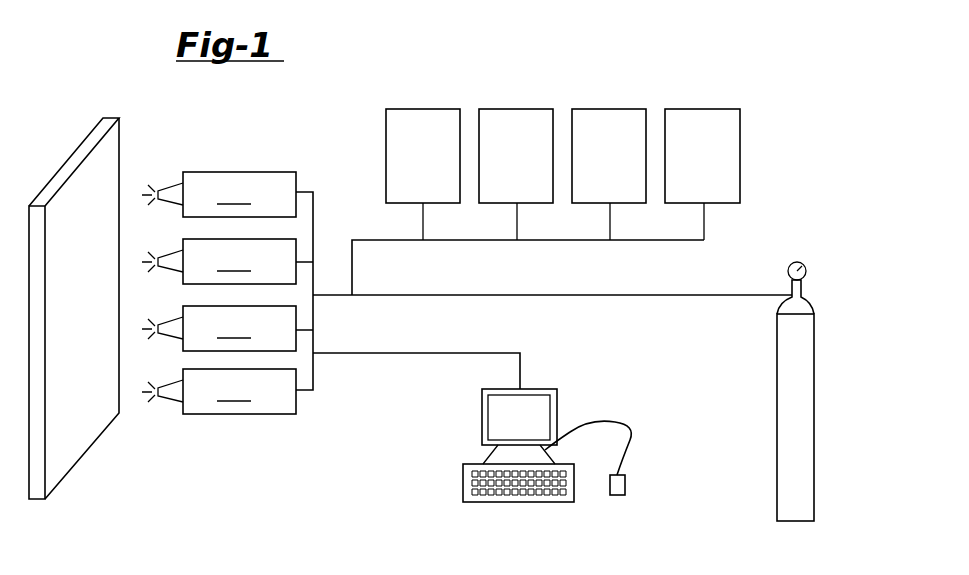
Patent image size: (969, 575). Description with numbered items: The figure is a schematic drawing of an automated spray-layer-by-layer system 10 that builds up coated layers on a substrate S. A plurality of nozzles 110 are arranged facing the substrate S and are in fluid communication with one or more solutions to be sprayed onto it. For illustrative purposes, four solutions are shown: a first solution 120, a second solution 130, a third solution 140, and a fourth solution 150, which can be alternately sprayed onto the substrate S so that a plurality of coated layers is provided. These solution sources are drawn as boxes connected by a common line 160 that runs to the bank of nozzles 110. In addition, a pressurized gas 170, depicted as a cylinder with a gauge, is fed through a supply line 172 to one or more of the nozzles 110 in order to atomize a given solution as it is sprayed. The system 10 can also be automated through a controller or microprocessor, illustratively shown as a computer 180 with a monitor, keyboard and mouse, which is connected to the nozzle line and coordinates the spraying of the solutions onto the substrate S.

The substrate S is at (85, 144).
The spray-layer-by-layer system 10 is at (816, 90).
The nozzles 110 is at (219, 293).
The first solution 120 is at (437, 160).
The second solution 130 is at (530, 160).
The third solution 140 is at (623, 160).
The fourth solution 150 is at (717, 160).
The supply line 160 is at (535, 241).
The pressurized gas 170 is at (815, 375).
The supply line 172 is at (480, 297).
The computer 180 is at (608, 390).